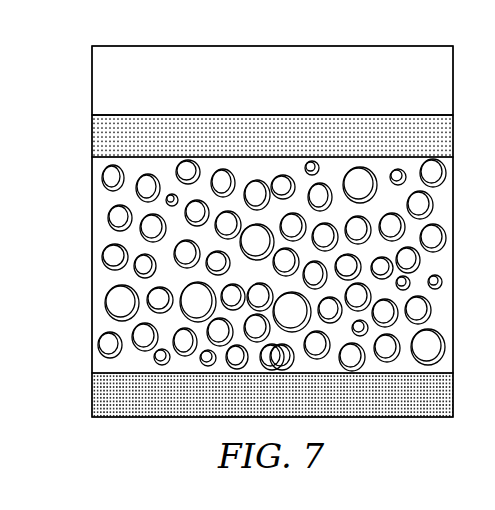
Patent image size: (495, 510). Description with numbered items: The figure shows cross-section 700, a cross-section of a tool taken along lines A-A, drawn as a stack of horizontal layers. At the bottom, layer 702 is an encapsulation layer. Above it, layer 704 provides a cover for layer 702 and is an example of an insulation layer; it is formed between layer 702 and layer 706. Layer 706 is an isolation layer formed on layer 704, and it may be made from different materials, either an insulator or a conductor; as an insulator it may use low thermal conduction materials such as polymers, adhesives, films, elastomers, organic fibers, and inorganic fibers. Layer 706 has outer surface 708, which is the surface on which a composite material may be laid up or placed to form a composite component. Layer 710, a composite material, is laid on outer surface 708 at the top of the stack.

The cross-section 700 is at (90, 221).
The layer 702 is at (91, 398).
The layer 704 is at (91, 285).
The layer 706 is at (91, 127).
The outer surface 708 is at (221, 112).
The layer 710 is at (91, 51).